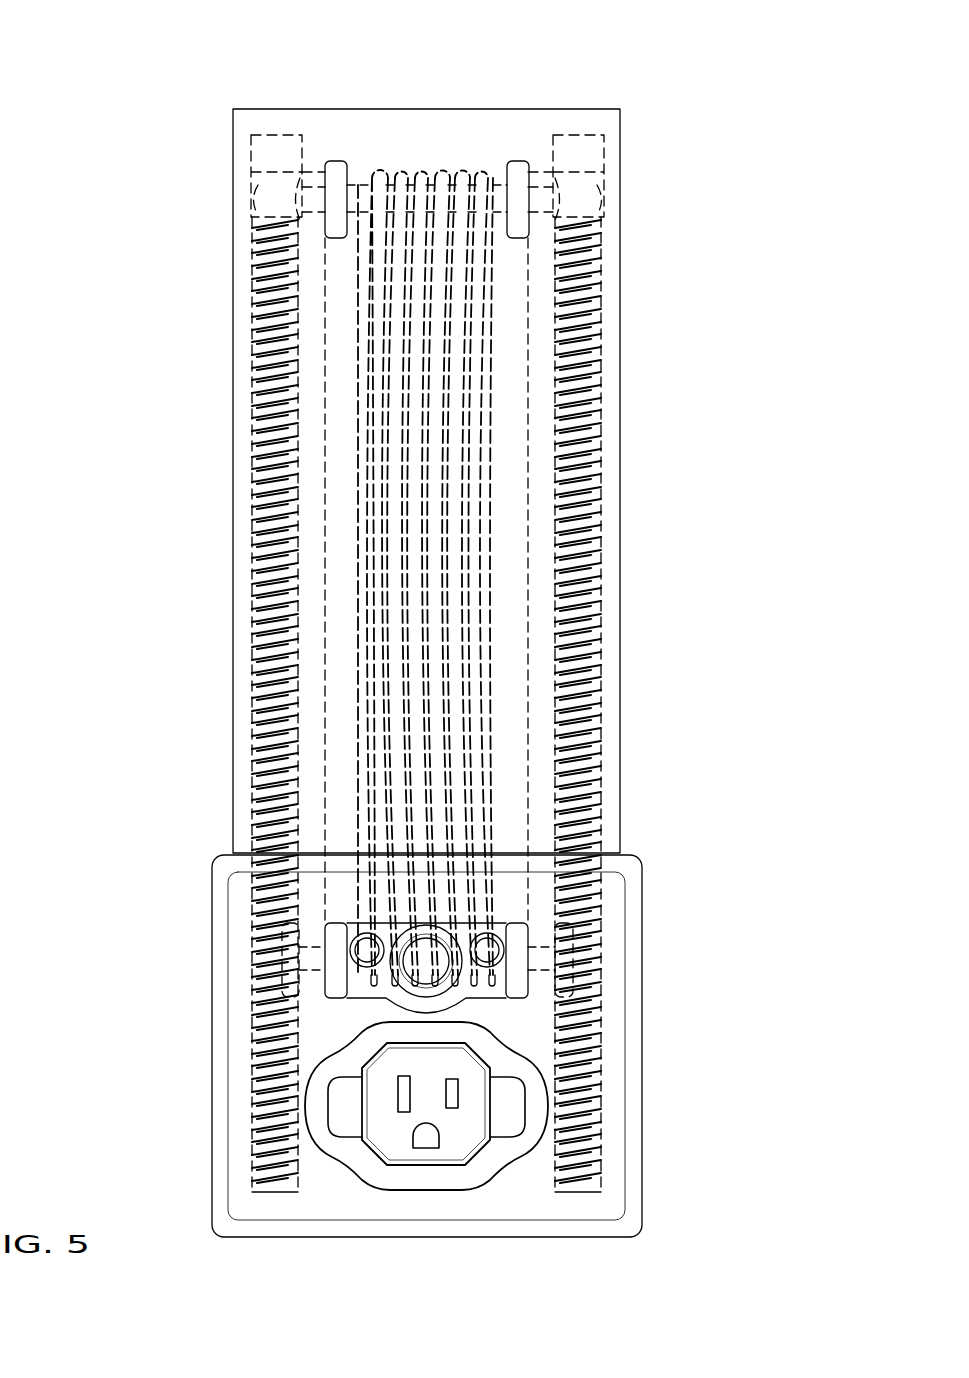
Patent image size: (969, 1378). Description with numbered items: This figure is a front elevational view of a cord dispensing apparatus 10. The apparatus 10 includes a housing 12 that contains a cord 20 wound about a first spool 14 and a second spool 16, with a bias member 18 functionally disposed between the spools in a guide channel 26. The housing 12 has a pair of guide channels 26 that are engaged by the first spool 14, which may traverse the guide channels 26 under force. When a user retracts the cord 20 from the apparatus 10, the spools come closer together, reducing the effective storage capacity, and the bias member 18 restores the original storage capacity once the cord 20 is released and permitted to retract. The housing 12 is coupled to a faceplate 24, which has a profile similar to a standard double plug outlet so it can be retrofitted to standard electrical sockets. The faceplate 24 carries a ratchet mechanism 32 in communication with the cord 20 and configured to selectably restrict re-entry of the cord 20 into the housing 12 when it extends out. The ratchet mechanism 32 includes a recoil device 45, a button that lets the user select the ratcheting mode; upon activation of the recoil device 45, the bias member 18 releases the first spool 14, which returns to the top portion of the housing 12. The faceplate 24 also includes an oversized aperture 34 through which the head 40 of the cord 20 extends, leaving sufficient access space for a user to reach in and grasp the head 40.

The cord dispensing apparatus 10 is at (697, 138).
The housing 12 is at (620, 410).
The first spool 14 is at (335, 160).
The second spool 16 is at (337, 960).
The bias member 18 is at (250, 566).
The cord 20 is at (459, 170).
The faceplate 24 is at (633, 1123).
The guide channel 26 is at (598, 282).
The ratchet mechanism 32 is at (542, 935).
The oversized aperture 34 is at (510, 1100).
The head 40 is at (380, 1112).
The recoil device 45 is at (420, 953).